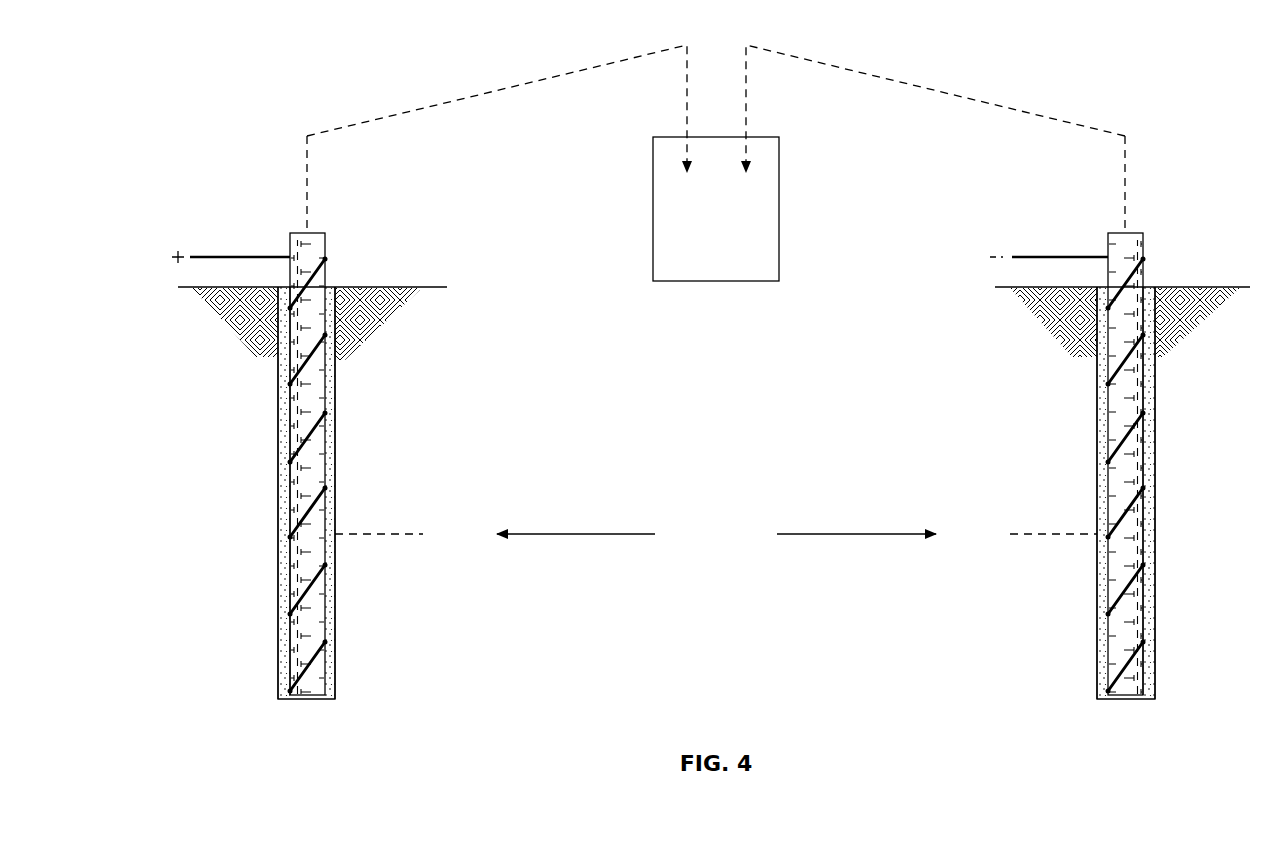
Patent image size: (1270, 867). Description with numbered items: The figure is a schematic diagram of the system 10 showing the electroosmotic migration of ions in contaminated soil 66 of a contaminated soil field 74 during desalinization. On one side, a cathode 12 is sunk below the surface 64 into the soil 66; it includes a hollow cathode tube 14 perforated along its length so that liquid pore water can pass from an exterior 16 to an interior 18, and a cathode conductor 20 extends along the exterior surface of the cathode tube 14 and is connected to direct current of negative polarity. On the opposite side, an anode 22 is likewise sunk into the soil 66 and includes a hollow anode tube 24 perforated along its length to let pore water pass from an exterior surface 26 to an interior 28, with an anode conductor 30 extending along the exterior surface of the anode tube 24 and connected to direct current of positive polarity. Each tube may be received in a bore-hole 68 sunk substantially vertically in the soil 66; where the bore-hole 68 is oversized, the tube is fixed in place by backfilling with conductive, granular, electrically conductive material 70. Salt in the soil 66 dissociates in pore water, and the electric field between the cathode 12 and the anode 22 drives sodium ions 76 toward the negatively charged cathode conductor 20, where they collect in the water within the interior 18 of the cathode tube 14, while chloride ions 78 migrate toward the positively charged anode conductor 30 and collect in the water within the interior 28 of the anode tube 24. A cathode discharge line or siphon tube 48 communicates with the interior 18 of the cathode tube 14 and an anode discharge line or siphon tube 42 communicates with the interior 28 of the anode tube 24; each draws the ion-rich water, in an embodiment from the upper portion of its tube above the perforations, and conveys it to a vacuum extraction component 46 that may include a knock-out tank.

The system 10 is at (1099, 82).
The cathode 12 is at (1162, 410).
The cathode tube 14 is at (1146, 470).
The exterior of the cathode tube 16 is at (1146, 502).
The interior of the cathode tube 18 is at (1153, 542).
The cathode conductor 20 is at (1030, 255).
The anode 22 is at (272, 391).
The anode tube 24 is at (326, 427).
The exterior surface of the anode tube 26 is at (326, 456).
The interior of the anode tube 28 is at (314, 528).
The anode conductor 30 is at (262, 256).
The anode discharge line 42 is at (492, 90).
The vacuum extraction component 46 is at (789, 210).
The cathode discharge line 48 is at (954, 95).
The surface 64 is at (430, 287).
The soil 66 is at (370, 381).
The bore-hole 68 is at (338, 622).
The electrically conductive material 70 is at (336, 578).
The contaminated soil field 74 is at (703, 380).
The sodium ions 76 is at (858, 534).
The chloride ions 78 is at (582, 534).